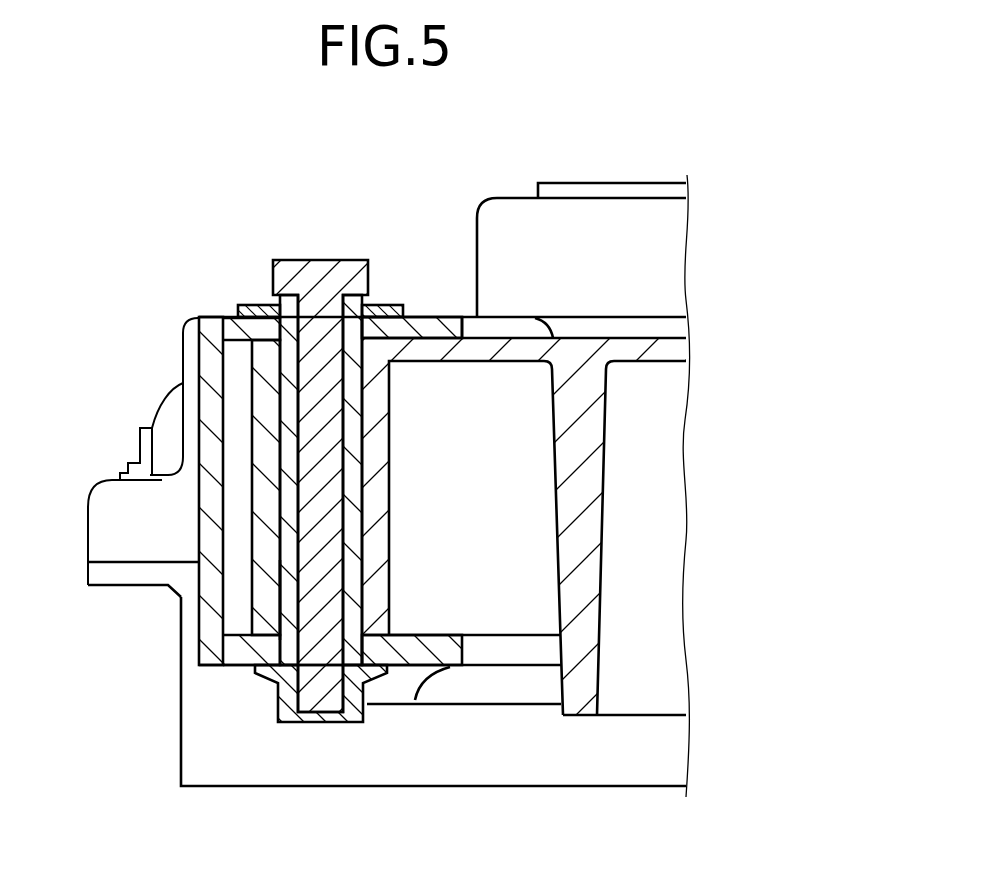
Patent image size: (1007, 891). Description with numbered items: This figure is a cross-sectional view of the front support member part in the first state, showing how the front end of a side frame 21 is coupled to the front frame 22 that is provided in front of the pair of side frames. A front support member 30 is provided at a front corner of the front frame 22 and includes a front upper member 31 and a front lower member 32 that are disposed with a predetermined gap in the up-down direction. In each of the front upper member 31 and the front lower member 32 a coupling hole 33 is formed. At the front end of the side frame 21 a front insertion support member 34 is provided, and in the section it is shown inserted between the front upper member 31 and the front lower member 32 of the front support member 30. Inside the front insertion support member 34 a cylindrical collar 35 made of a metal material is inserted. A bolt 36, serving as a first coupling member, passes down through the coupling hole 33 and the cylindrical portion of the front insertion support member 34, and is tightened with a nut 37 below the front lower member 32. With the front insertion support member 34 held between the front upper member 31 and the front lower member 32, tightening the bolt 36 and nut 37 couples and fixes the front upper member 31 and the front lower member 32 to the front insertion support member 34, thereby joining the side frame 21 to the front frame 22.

The side frame 21 is at (473, 592).
The front frame 22 is at (493, 243).
The front support member 30 is at (208, 398).
The front upper member 31 is at (230, 328).
The front lower member 32 is at (242, 650).
The coupling hole 33 is at (298, 328).
The front insertion support member 34 is at (268, 463).
The cylindrical collar 35 is at (288, 607).
The bolt 36 is at (302, 275).
The nut 37 is at (353, 705).